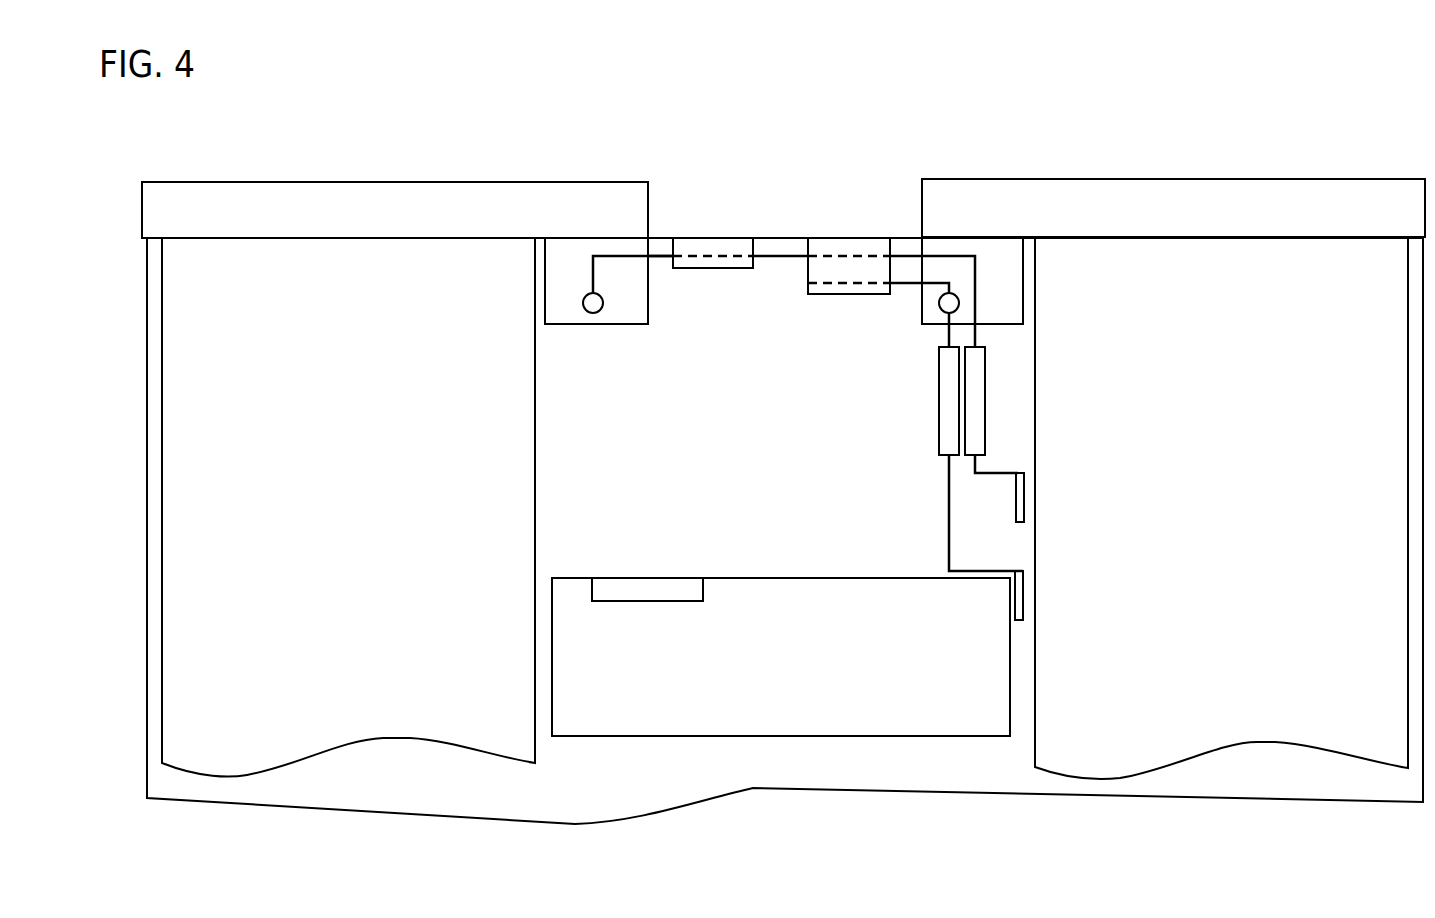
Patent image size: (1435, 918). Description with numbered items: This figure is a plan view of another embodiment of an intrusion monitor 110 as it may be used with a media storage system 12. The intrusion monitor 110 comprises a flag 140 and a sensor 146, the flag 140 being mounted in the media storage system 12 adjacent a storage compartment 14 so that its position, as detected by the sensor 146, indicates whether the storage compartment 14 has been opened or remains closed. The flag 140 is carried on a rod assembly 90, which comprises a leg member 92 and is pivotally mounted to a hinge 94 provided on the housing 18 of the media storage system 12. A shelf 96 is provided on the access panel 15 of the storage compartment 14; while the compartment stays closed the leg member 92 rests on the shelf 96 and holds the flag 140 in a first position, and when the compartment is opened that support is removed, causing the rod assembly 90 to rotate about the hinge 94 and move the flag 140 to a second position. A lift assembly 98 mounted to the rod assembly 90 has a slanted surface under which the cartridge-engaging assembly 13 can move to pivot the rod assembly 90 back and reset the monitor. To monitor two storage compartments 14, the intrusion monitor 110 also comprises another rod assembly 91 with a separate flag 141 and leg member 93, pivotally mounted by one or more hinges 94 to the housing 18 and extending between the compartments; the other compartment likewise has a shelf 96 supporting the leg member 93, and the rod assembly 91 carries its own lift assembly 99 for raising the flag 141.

The media storage system 12 is at (865, 788).
The cartridge-engaging assembly 13 is at (833, 681).
The storage compartment 14 is at (410, 740).
The access panel 15 is at (492, 182).
The housing 18 is at (793, 237).
The rod assembly 90 is at (946, 545).
The rod assembly 91 is at (657, 260).
The leg member 92 is at (939, 303).
The leg member 93 is at (593, 313).
The hinge 94 is at (842, 294).
The shelf 96 is at (583, 278).
The lift assembly 98 is at (986, 373).
The lift assembly 99 is at (938, 367).
The intrusion monitor 110 is at (873, 215).
The flag 140 is at (1016, 493).
The flag 141 is at (1023, 588).
The sensor 146 is at (675, 577).